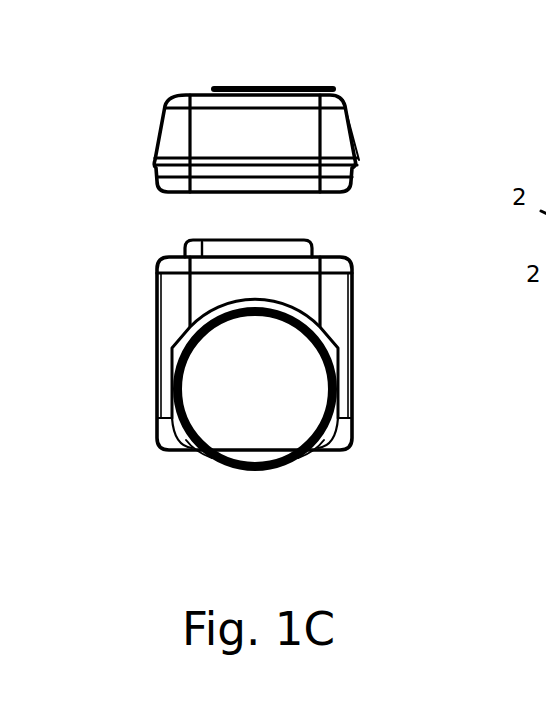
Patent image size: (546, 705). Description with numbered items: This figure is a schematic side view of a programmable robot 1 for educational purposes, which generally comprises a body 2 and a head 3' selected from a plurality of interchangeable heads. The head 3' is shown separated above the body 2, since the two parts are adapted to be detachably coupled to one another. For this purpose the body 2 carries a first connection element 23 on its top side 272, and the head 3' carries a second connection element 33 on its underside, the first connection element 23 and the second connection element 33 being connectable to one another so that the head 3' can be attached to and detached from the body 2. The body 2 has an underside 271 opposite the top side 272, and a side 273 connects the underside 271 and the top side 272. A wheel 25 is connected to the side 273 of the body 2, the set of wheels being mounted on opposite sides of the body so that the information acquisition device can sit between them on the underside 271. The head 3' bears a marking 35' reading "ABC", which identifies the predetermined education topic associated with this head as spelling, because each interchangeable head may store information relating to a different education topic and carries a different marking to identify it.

The programmable robot 1 is at (395, 227).
The body 2 is at (140, 260).
The head 3' is at (239, 122).
The marking 35' is at (330, 92).
The second connection element 33 is at (238, 193).
The first connection element 23 is at (273, 237).
The wheel 25 is at (205, 392).
The underside 271 is at (320, 450).
The top side 272 is at (322, 253).
The side 273 is at (328, 320).